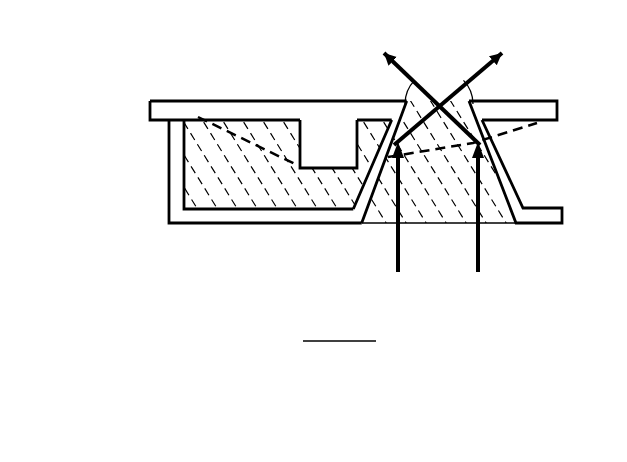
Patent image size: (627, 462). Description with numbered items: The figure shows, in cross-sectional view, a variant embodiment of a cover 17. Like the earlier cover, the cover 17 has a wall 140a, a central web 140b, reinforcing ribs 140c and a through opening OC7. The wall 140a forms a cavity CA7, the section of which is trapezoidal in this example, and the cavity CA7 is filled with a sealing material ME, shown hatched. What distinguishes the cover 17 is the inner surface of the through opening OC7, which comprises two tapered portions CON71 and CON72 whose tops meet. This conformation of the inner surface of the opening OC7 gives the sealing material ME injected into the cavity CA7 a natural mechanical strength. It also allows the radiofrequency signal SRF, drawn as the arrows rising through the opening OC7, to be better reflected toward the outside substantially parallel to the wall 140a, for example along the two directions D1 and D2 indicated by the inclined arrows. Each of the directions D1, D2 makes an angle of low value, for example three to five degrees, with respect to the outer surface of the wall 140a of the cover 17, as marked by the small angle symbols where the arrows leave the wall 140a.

The cover 17 is at (219, 77).
The wall 140a is at (282, 101).
The central web 140b is at (320, 122).
The reinforcing ribs 140c is at (222, 128).
The sealing material ME is at (237, 192).
The cavity CA7 is at (257, 176).
The tapered portion CON72 is at (372, 200).
The tapered portion CON71 is at (463, 120).
The radiofrequency signal SRF is at (439, 212).
The through opening OC7 is at (500, 216).
The direction D1 is at (459, 89).
The direction D2 is at (426, 89).